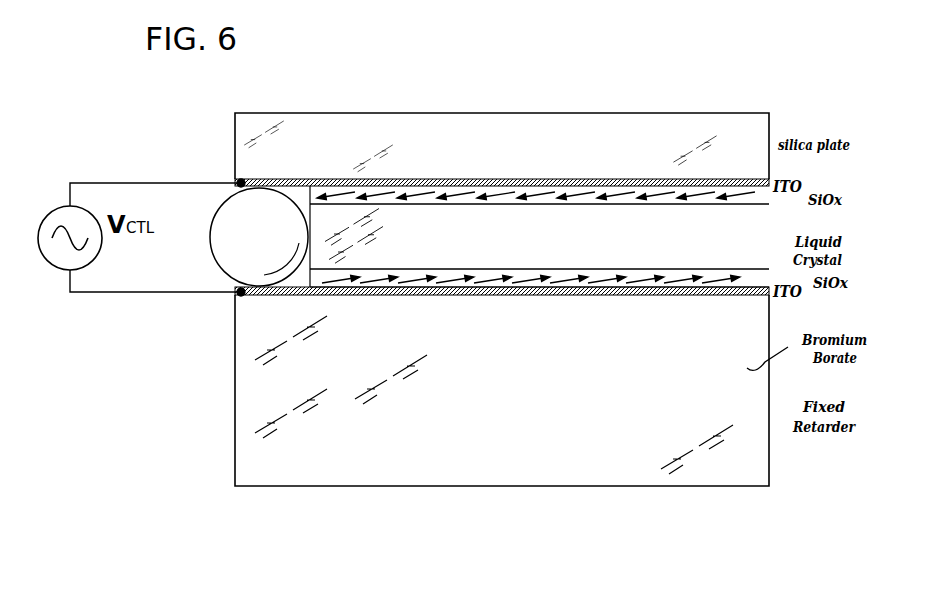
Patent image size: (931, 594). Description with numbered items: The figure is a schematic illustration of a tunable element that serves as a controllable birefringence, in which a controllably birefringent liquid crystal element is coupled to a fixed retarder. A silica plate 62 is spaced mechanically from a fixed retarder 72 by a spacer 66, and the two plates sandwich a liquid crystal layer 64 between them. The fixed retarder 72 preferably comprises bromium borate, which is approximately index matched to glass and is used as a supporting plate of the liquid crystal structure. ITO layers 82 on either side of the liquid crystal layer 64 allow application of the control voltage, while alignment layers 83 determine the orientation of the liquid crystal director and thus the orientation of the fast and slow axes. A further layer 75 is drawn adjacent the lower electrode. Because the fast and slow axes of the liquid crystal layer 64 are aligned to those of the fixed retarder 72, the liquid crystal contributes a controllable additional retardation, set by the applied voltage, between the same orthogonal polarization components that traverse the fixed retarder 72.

The silica plate 62 is at (314, 126).
The liquid crystal layer 64 is at (437, 236).
The spacer 66 is at (233, 210).
The fixed retarder 72 is at (380, 486).
The bottom electrode layer 75 is at (642, 298).
The ITO layers 82 is at (533, 180).
The alignment layers 83 is at (600, 198).